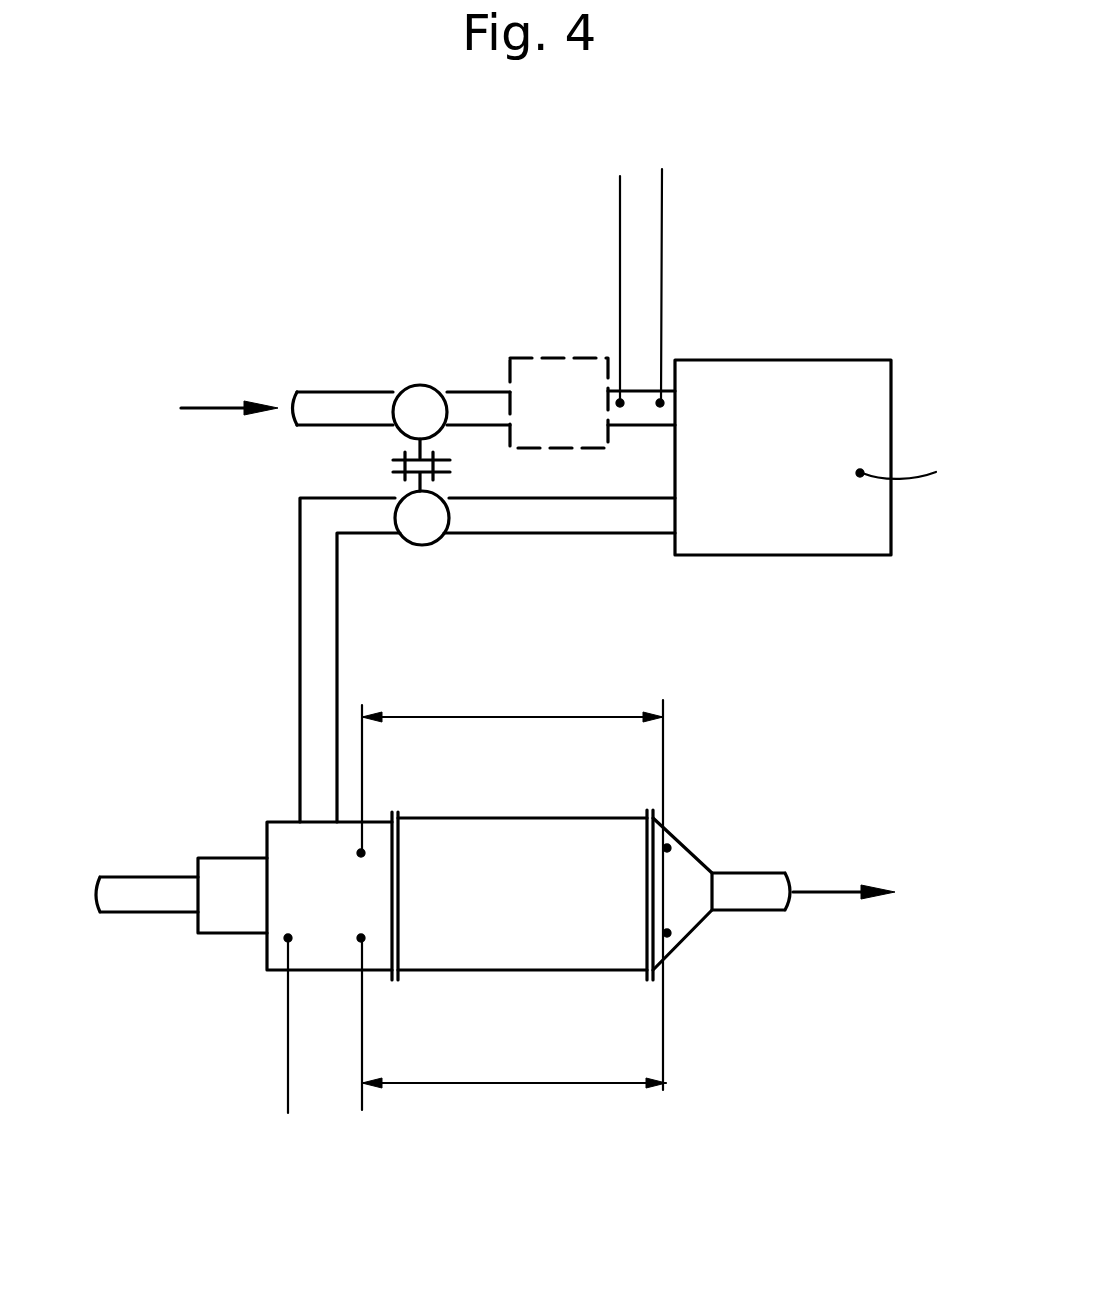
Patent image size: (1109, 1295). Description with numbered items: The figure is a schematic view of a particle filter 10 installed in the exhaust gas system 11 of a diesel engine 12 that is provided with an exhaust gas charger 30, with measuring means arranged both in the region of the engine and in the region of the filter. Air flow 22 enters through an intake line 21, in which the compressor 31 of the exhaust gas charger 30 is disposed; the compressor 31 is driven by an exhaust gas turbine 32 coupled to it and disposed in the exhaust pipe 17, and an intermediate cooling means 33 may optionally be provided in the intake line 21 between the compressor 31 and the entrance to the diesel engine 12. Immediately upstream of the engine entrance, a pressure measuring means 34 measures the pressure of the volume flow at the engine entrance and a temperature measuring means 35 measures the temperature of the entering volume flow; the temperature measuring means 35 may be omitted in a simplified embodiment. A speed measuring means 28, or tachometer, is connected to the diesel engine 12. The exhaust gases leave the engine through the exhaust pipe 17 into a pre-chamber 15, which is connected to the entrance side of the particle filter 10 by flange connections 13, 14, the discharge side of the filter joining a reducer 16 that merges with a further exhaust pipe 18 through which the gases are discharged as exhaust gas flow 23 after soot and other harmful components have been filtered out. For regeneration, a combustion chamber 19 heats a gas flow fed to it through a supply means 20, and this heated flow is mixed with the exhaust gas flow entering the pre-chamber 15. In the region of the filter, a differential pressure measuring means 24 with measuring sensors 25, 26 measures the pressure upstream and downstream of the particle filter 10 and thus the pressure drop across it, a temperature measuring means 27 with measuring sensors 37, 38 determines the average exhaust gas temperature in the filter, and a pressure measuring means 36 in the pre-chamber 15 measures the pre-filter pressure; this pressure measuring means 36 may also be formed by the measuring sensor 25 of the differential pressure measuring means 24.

The particle filter 10 is at (590, 932).
The exhaust gas system 11 is at (222, 686).
The diesel engine 12 is at (804, 488).
The flange connection 13 is at (399, 814).
The flange connection 14 is at (648, 815).
The pre-chamber 15 is at (298, 912).
The reducer 16 is at (683, 863).
The exhaust pipe 17 is at (337, 655).
The exhaust pipe 18 is at (745, 885).
The combustion chamber 19 is at (228, 913).
The supply means 20 is at (145, 898).
The intake line 21 is at (472, 391).
The air flow 22 is at (192, 407).
The exhaust gas flow 23 is at (845, 890).
The differential pressure measuring means 24 is at (545, 1112).
The measuring sensor 25 is at (358, 947).
The measuring sensor 26 is at (668, 937).
The temperature measuring means 27 is at (590, 648).
The speed measuring means 28 is at (862, 471).
The exhaust gas charger 30 is at (402, 350).
The compressor 31 is at (428, 386).
The exhaust gas turbine 32 is at (445, 538).
The intermediate cooling means 33 is at (537, 435).
The pressure measuring means 34 is at (618, 398).
The temperature measuring means 35 is at (662, 398).
The pressure measuring means 36 is at (244, 1090).
The measuring sensor 37 is at (358, 851).
The measuring sensor 38 is at (668, 847).